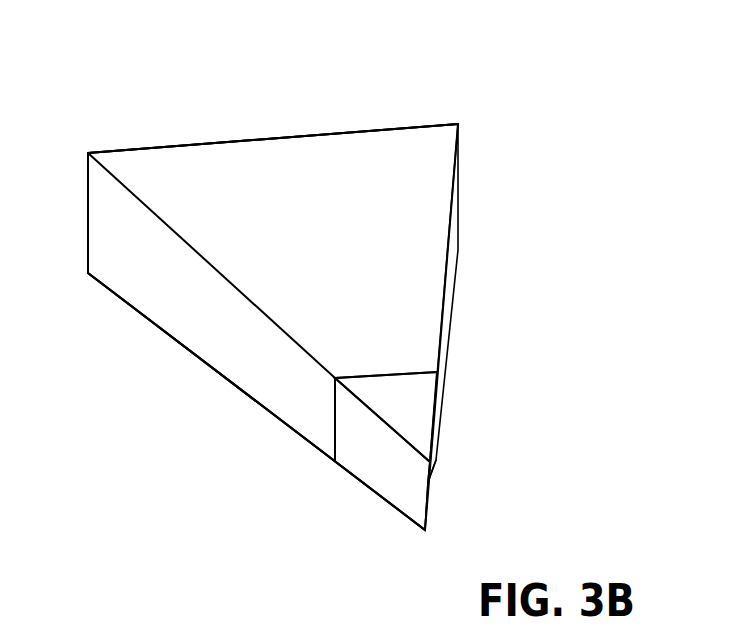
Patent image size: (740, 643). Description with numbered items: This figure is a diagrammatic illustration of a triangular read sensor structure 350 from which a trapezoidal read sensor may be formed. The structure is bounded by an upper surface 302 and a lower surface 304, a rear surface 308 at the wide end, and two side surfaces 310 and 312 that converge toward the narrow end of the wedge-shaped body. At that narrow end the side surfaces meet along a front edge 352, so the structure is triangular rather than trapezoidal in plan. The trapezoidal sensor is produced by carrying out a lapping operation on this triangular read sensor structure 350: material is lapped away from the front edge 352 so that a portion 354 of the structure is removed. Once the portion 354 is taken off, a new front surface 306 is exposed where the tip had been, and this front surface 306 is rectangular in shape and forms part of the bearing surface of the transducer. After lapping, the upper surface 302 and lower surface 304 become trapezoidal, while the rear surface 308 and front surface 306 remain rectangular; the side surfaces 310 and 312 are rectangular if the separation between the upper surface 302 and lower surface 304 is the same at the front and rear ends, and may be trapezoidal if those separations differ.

The triangular read sensor structure 350 is at (487, 142).
The upper surface 302 is at (276, 198).
The rear surface 308 is at (212, 143).
The side surface 310 is at (218, 332).
The lower surface 304 is at (253, 401).
The front surface 306 is at (393, 368).
The side surface 312 is at (448, 297).
The portion 354 is at (404, 397).
The front edge 352 is at (428, 482).